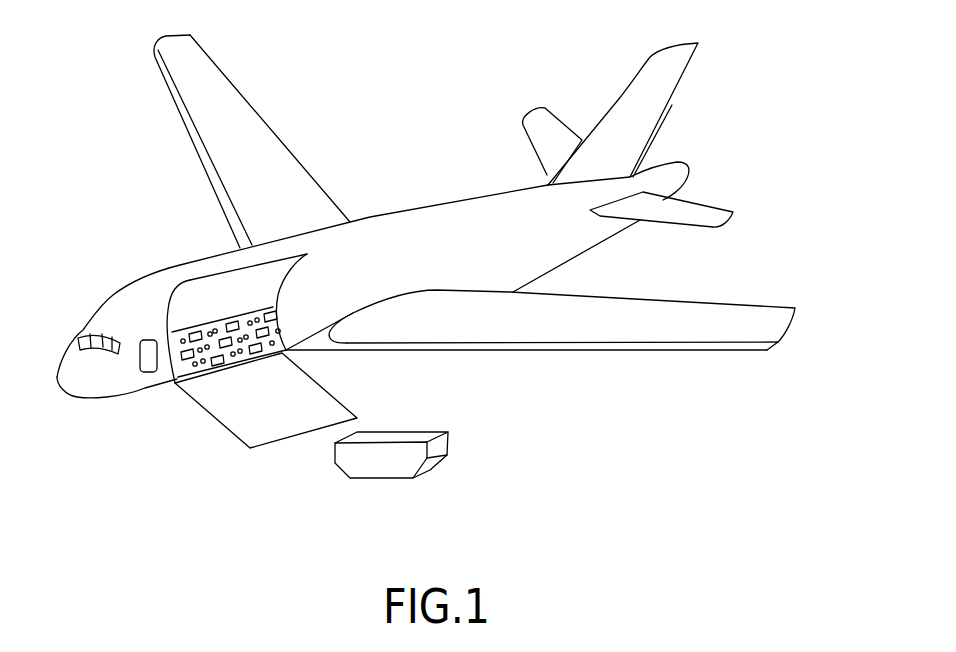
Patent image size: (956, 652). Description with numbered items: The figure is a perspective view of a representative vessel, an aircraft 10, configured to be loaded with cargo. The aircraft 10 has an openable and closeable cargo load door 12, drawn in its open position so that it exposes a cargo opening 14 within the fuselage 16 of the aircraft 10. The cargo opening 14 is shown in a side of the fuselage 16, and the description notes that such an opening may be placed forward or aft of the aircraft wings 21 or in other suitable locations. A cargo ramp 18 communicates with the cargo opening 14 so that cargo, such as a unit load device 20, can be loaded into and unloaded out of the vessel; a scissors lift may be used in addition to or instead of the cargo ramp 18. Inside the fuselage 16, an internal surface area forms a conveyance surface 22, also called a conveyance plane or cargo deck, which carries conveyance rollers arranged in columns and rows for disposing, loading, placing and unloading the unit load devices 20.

The aircraft 10 is at (717, 69).
The cargo load door 12 is at (167, 312).
The cargo opening 14 is at (173, 367).
The fuselage 16 is at (593, 250).
The cargo ramp 18 is at (267, 445).
The unit load device 20 is at (390, 468).
The aircraft wings 21 is at (790, 323).
The conveyance surface 22 is at (290, 350).